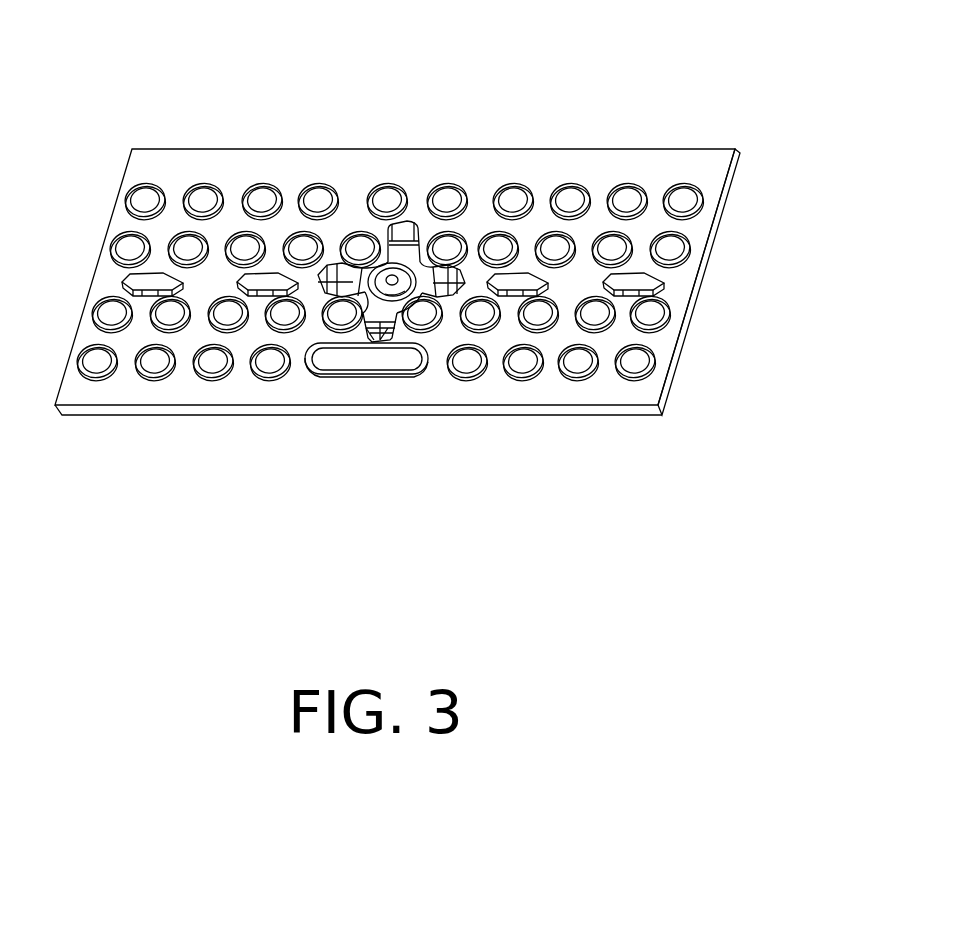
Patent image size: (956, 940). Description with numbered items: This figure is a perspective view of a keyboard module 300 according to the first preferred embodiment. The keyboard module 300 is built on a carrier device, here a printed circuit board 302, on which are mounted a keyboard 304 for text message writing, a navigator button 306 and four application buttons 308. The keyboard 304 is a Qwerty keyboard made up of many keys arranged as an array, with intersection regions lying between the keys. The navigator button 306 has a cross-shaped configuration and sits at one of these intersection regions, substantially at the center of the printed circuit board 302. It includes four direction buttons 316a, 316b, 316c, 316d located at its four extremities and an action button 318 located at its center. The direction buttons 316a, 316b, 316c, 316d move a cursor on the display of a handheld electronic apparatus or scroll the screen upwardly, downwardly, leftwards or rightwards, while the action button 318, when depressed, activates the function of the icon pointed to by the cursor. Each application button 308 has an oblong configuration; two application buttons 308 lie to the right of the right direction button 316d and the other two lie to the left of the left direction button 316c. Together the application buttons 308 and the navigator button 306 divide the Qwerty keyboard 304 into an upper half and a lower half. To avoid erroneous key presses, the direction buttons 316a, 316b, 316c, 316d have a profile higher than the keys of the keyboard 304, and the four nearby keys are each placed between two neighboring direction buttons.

The keyboard module 300 is at (268, 565).
The printed circuit board 302 is at (687, 347).
The keyboard 304 is at (623, 195).
The navigator button 306 is at (360, 282).
The application buttons 308 is at (152, 280).
The direction button 316a is at (407, 222).
The direction button 316b is at (368, 330).
The left direction button 316c is at (331, 264).
The right direction button 316d is at (457, 293).
The action button 318 is at (410, 292).